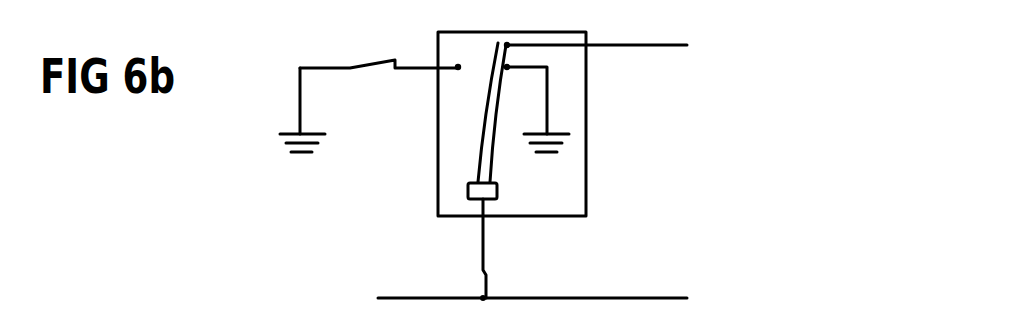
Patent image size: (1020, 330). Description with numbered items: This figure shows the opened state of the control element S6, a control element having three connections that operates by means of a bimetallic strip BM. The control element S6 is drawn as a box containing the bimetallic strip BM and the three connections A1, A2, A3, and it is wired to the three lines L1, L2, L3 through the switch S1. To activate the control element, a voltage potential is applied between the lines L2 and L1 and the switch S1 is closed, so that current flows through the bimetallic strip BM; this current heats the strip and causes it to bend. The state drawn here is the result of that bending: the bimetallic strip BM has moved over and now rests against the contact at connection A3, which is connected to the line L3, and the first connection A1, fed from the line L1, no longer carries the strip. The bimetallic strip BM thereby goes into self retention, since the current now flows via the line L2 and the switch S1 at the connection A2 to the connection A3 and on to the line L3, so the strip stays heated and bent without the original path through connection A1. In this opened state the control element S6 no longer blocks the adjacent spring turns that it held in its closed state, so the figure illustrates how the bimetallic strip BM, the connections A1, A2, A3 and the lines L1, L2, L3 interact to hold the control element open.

The line L1 is at (300, 97).
The line L2 is at (642, 296).
The line L3 is at (687, 46).
The switch S1 is at (370, 70).
The control element S6 is at (587, 155).
The connection A1 is at (417, 70).
The connection A2 is at (485, 225).
The connection A3 is at (630, 48).
The bimetallic strip BM is at (481, 133).